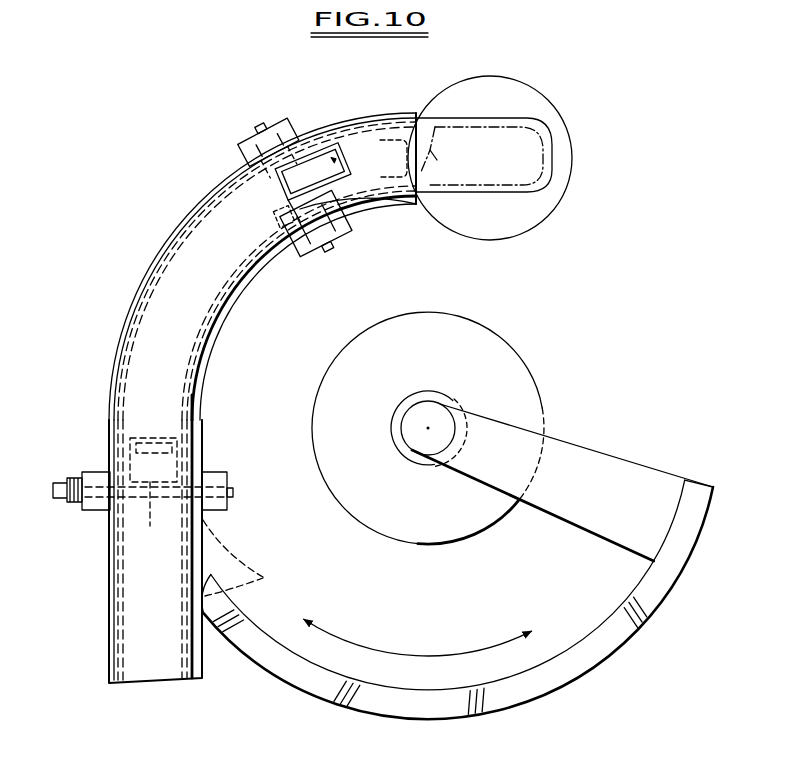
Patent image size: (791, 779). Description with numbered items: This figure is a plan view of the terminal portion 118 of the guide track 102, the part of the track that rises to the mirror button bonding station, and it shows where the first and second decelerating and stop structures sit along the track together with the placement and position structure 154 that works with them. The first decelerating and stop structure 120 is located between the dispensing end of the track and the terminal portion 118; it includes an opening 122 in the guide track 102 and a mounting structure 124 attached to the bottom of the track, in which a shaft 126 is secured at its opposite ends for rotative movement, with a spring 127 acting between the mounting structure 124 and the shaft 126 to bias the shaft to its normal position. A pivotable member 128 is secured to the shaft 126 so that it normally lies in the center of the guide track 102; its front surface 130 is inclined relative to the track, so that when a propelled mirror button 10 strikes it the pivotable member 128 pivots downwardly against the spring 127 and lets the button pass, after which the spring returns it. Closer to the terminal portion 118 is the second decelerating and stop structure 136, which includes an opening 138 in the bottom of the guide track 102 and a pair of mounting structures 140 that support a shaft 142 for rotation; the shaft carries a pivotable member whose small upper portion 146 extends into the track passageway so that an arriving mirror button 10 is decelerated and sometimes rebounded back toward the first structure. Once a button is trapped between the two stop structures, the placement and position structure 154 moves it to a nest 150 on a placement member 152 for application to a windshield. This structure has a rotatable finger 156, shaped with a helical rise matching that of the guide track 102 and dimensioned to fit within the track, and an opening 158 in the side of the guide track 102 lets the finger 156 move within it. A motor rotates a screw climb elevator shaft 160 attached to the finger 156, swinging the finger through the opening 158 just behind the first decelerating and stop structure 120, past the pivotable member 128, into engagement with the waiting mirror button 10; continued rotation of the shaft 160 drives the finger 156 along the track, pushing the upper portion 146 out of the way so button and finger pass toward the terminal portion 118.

The mirror button 10 is at (502, 122).
The guide track 102 is at (172, 268).
The terminal portion 118 is at (386, 208).
The first decelerating and stop structure 120 is at (212, 458).
The opening 122 is at (142, 432).
The mounting structure 124 is at (217, 512).
The shaft 126 is at (233, 493).
The spring 127 is at (72, 479).
The pivotable member 128 is at (204, 400).
The front surface 130 is at (158, 524).
The second decelerating and stop structure 136 is at (341, 260).
The opening 138 is at (336, 150).
The mounting structure 140 is at (240, 158).
The shaft 142 is at (262, 128).
The upper portion 146 is at (323, 172).
The nest 150 is at (535, 141).
The placement member 152 is at (557, 167).
The placement and position structure 154 is at (572, 630).
The rotatable finger 156 is at (310, 683).
The opening 158 is at (259, 559).
The screw climb elevator shaft 160 is at (434, 416).